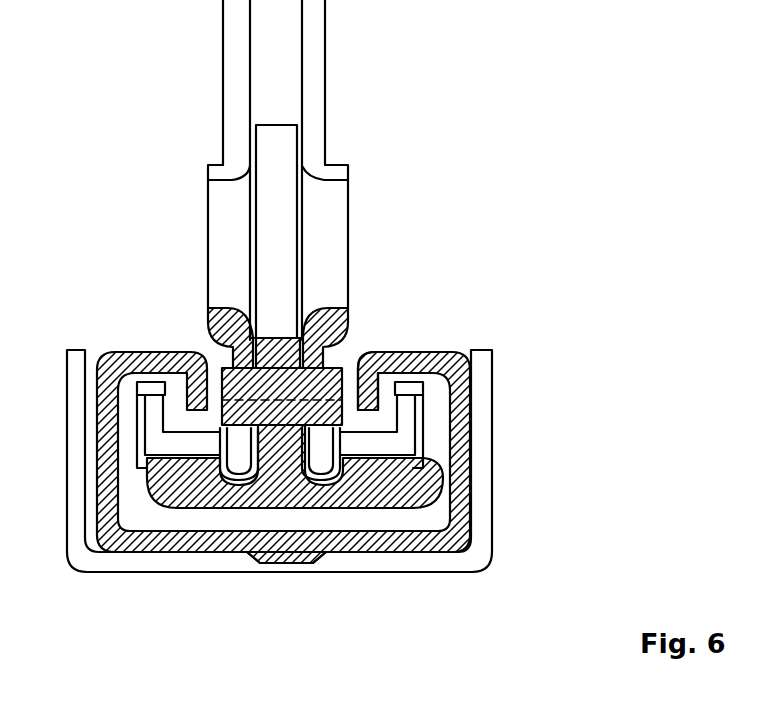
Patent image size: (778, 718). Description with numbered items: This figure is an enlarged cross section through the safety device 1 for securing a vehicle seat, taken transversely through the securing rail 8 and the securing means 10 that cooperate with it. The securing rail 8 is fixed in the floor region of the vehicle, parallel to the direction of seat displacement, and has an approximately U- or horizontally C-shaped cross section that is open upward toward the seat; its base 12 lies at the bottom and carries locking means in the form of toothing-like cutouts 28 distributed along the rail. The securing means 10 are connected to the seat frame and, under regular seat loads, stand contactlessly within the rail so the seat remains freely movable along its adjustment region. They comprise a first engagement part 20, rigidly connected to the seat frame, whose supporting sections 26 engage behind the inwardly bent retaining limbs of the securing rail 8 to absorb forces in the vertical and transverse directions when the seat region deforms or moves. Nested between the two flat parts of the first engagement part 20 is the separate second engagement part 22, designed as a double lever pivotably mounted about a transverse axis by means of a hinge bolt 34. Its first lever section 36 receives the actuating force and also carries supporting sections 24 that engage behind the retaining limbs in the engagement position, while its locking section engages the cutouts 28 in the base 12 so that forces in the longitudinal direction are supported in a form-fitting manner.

The safety device 1 is at (462, 274).
The securing rail 8 is at (455, 547).
The securing means 10 is at (428, 455).
The base 12 is at (190, 542).
The first engagement part 20 is at (352, 285).
The second engagement part 22 is at (280, 345).
The supporting sections 24 is at (410, 412).
The supporting sections 26 is at (458, 375).
The toothing-like cutouts 28 is at (268, 548).
The hinge bolt 34 is at (217, 373).
The first lever section 36 is at (276, 134).